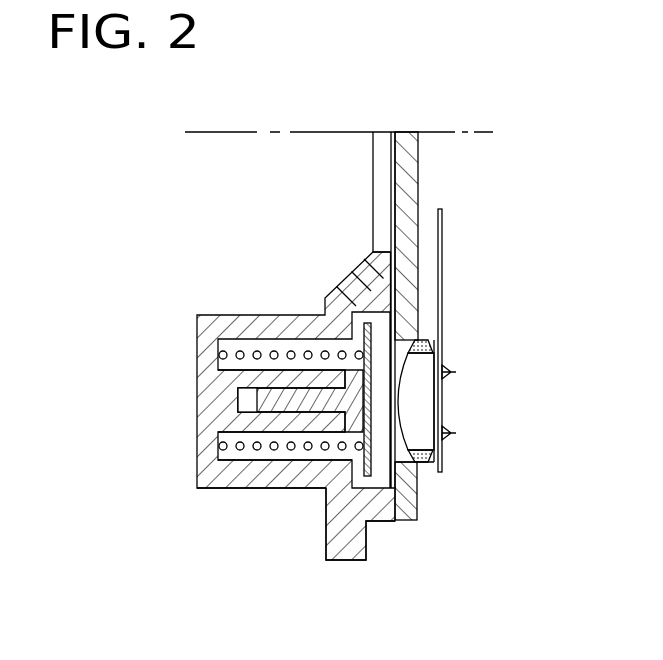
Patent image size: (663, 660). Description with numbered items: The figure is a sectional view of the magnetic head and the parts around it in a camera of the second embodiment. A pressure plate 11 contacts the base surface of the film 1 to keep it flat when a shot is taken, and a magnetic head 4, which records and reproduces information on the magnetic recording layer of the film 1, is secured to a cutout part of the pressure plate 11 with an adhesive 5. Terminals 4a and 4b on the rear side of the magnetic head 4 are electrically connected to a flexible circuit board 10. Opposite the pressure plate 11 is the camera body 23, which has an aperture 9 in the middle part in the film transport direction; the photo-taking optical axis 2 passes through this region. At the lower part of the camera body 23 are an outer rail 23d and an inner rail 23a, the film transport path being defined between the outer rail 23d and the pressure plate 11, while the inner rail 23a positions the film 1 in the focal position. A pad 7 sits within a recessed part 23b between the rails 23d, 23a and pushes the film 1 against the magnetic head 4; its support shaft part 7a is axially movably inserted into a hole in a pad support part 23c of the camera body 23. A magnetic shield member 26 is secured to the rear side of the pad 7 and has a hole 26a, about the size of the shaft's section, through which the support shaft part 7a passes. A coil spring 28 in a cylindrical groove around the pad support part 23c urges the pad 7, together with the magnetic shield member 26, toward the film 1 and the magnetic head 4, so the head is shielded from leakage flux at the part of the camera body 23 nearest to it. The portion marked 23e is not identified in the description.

The film 1 is at (393, 282).
The photo-taking optical axis 2 is at (290, 132).
The magnetic head 4 is at (420, 393).
The terminal 4a is at (452, 372).
The terminal 4b is at (450, 432).
The adhesive 5 is at (420, 341).
The pad 7 is at (380, 404).
The support shaft part 7a is at (272, 400).
The aperture 9 is at (383, 182).
The flexible circuit board 10 is at (443, 221).
The pressure plate 11 is at (410, 157).
The camera body 23 is at (356, 297).
The inner rail 23a is at (380, 271).
The recessed part 23b is at (382, 327).
The pad support part 23c is at (275, 382).
The outer rail 23d is at (377, 498).
The housing bottom wall 23e is at (244, 455).
The magnetic shield member 26 is at (397, 470).
The hole 26a is at (365, 398).
The coil spring 28 is at (275, 443).